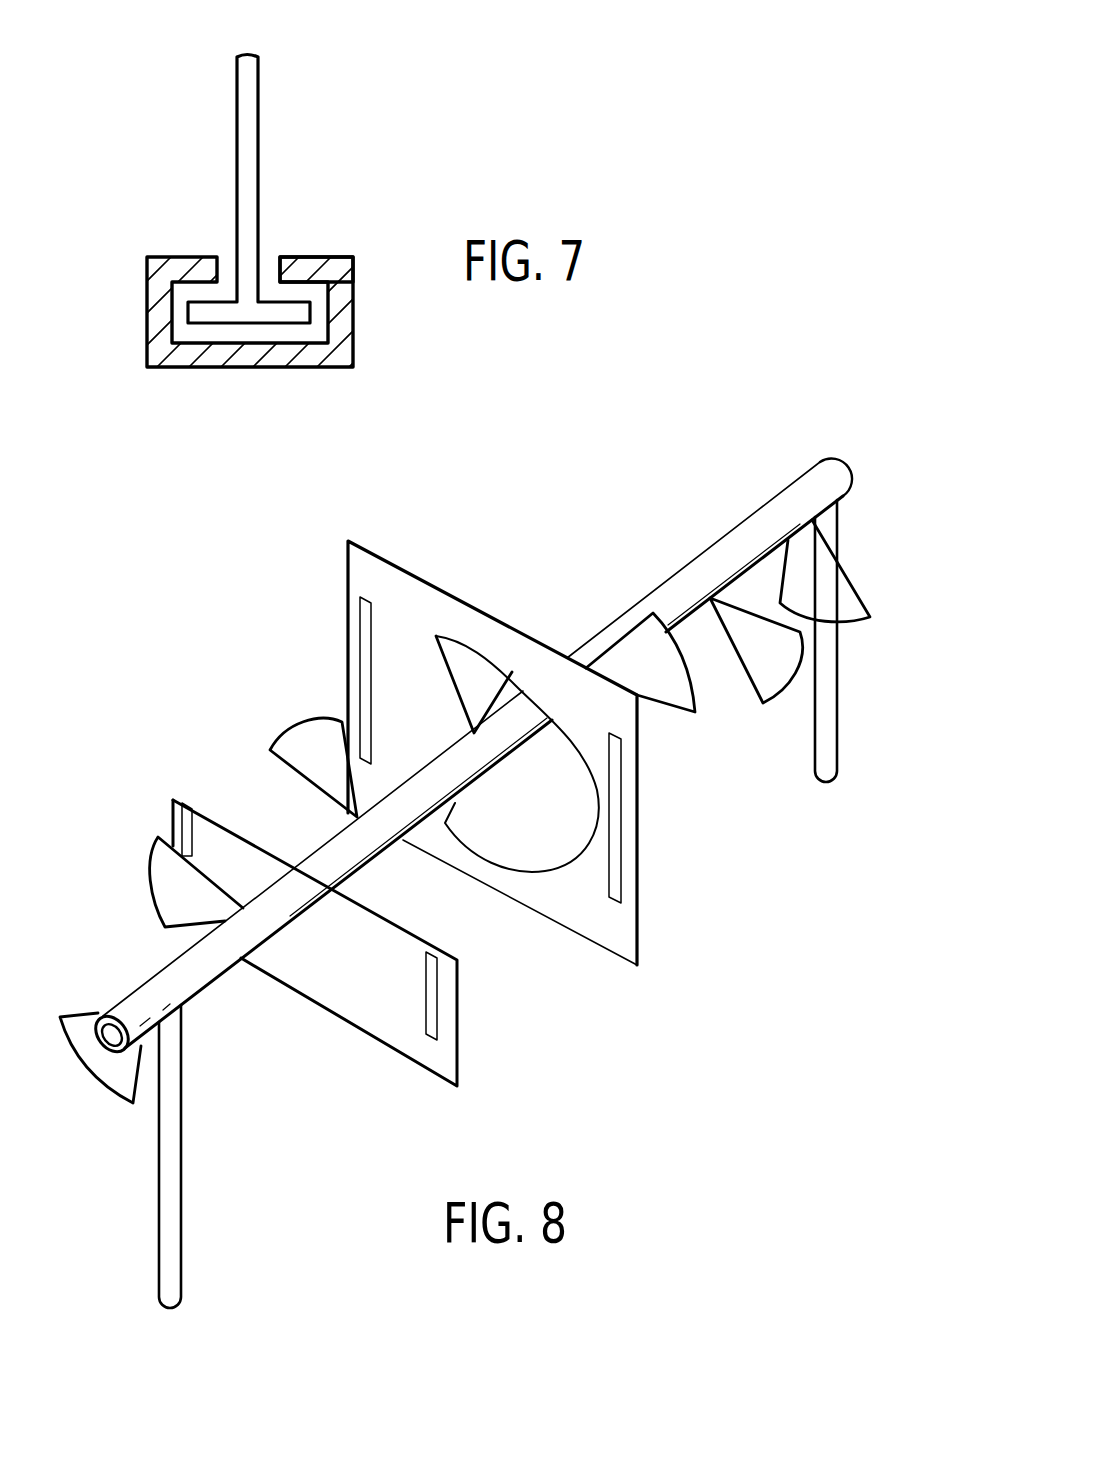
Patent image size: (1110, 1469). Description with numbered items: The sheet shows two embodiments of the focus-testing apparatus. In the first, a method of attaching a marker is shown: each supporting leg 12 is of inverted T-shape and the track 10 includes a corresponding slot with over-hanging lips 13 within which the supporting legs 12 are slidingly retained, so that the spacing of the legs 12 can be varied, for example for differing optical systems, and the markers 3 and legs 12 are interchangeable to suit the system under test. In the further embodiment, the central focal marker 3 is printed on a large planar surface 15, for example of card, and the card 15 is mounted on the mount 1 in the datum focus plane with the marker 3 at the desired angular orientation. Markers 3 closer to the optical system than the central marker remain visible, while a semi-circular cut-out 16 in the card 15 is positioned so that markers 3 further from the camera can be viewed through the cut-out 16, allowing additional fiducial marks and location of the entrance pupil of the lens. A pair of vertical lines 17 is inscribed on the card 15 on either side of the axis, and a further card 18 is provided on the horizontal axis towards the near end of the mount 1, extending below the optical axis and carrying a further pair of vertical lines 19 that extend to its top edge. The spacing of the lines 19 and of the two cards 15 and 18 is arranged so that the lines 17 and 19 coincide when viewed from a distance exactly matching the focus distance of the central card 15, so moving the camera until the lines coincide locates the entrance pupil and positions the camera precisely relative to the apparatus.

In FIG. 8, the mount 1 is at (195, 980).
In FIG. 8, the marker 3 is at (77, 1027).
In FIG. 7, the track 10 is at (353, 312).
In FIG. 7, the supporting leg 12 is at (258, 128).
In FIG. 7, the over-hanging lip 13 is at (297, 255).
In FIG. 8, the planar surface 15 is at (421, 594).
In FIG. 8, the semi-circular cut-out 16 is at (518, 843).
In FIG. 8, the vertical lines 17 is at (366, 645).
In FIG. 8, the further card 18 is at (458, 1066).
In FIG. 8, the vertical lines 19 is at (192, 835).